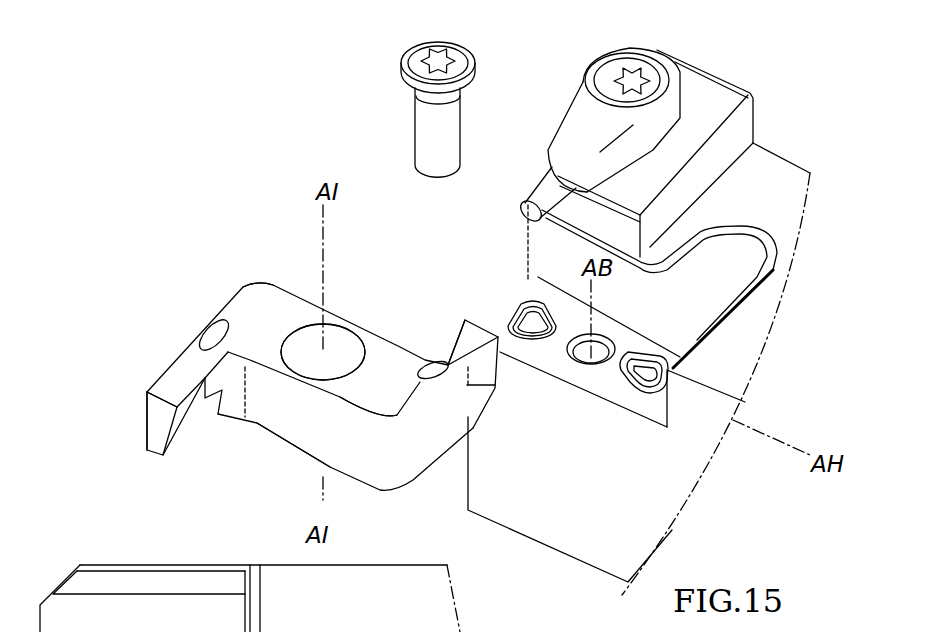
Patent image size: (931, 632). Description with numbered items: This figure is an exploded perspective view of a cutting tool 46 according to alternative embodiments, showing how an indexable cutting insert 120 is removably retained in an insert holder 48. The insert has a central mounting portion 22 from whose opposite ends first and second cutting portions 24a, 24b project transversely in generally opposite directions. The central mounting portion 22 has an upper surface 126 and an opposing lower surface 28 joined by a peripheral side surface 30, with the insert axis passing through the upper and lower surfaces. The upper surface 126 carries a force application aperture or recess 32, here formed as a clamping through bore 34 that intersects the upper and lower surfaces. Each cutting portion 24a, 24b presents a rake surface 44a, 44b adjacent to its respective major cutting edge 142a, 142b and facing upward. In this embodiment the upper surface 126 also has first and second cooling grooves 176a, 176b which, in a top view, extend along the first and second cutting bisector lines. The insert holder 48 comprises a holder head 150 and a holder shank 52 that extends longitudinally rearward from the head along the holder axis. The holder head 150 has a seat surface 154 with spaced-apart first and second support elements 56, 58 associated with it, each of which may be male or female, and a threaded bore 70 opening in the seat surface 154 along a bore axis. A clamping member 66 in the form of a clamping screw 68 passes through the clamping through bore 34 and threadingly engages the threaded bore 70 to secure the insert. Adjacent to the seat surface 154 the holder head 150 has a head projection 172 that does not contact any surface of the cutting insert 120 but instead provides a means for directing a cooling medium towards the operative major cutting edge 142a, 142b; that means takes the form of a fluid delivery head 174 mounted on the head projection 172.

The central mounting portion 22 is at (315, 437).
The first cutting portion 24a is at (198, 430).
The second cutting portion 24b is at (475, 417).
The lower surface 28 is at (278, 475).
The peripheral side surface 30 is at (420, 462).
The force application aperture or recess 32 is at (332, 323).
The clamping through bore 34 is at (350, 323).
The first rake surface 44a is at (170, 390).
The second rake surface 44b is at (470, 343).
The cutting tool 46 is at (385, 172).
The insert holder 48 is at (778, 212).
The holder shank 52 is at (760, 350).
The first support element 56 is at (655, 335).
The second support element 58 is at (526, 285).
The clamping member 66 is at (470, 50).
The clamping screw 68 is at (455, 120).
The threaded bore 70 is at (603, 335).
The cutting insert 120 is at (250, 285).
The upper surface 126 is at (283, 292).
The first major cutting edge 142a is at (148, 420).
The second major cutting edge 142b is at (470, 323).
The holder head 150 is at (592, 487).
The seat surface 154 is at (500, 352).
The head projection 172 is at (742, 130).
The fluid delivery head 174 is at (540, 137).
The first cooling groove 176a is at (210, 335).
The second cooling groove 176b is at (430, 357).